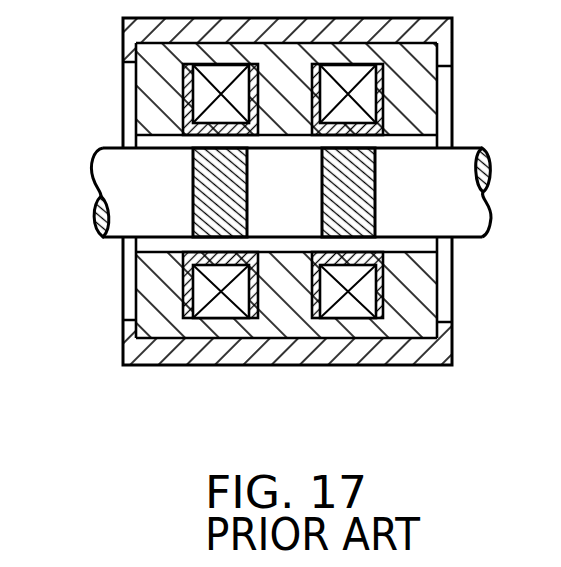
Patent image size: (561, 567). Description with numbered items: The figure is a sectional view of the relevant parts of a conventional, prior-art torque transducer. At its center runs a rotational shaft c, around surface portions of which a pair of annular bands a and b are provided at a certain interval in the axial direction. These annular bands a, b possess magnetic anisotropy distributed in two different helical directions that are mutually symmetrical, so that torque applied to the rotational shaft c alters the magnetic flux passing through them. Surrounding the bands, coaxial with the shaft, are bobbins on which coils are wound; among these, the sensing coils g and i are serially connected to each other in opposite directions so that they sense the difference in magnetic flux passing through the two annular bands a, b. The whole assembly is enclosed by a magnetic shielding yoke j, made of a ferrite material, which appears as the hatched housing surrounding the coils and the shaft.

The annular band a is at (206, 199).
The annular band b is at (360, 208).
The rotational shaft c is at (117, 168).
The sensing coil g is at (225, 312).
The sensing coil i is at (350, 310).
The magnetic shielding yoke j is at (413, 100).